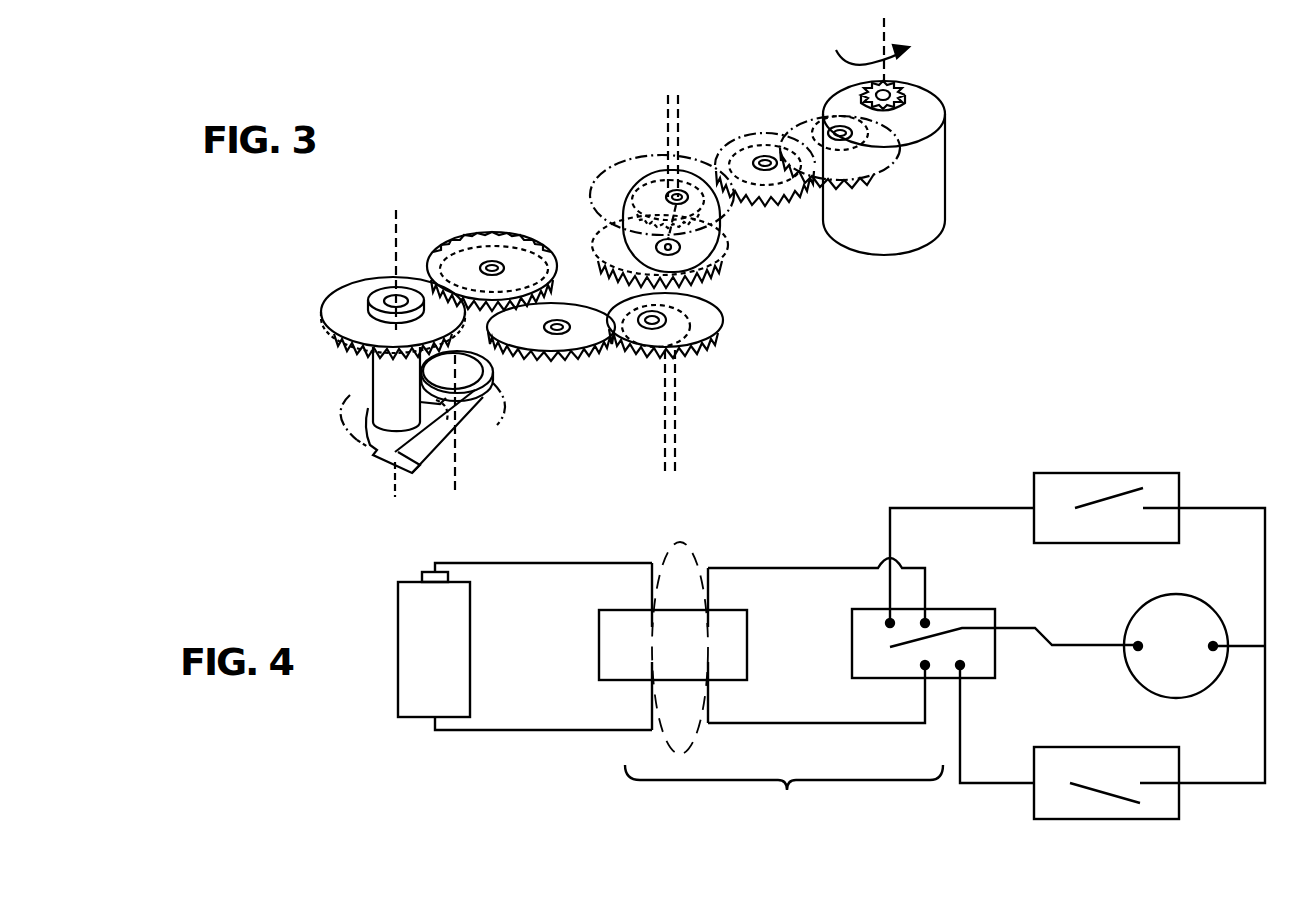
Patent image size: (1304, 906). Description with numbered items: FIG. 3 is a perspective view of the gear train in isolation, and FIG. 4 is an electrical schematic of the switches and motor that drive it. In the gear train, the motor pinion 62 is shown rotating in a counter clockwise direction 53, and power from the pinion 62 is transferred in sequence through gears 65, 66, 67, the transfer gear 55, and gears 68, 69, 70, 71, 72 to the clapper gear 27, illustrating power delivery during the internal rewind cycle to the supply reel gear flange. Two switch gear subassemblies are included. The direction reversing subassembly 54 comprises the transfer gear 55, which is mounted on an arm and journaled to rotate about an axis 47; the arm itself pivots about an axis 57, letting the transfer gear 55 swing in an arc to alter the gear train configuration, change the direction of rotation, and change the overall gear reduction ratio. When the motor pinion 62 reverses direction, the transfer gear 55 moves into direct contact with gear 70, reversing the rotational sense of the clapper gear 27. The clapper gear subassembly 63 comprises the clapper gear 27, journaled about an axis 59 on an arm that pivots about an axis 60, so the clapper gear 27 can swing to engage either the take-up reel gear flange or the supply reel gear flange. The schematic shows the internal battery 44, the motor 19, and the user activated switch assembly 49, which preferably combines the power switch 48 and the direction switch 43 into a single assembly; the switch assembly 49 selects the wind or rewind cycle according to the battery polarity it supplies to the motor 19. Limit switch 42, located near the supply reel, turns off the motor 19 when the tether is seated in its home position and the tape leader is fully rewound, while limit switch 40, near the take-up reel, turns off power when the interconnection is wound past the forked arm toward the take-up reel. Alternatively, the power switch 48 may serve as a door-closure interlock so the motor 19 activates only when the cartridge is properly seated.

In FIG. 3, the motor 19 is at (945, 153).
In FIG. 4, the motor 19 is at (1194, 646).
In FIG. 3, the clapper gear 27 is at (500, 392).
In FIG. 4, the limit switch 40 is at (1103, 473).
In FIG. 4, the limit switch 42 is at (1160, 819).
In FIG. 4, the direction switch 43 is at (943, 693).
In FIG. 4, the internal battery 44 is at (398, 651).
In FIG. 3, the axis 47 is at (665, 436).
In FIG. 4, the power switch 48 is at (680, 688).
In FIG. 4, the switch assembly 49 is at (784, 793).
In FIG. 3, the counter clockwise direction 53 is at (858, 51).
In FIG. 3, the direction reversing subassembly 54 is at (682, 100).
In FIG. 3, the transfer gear 55 is at (713, 280).
In FIG. 3, the axis 57 is at (675, 436).
In FIG. 3, the axis 59 is at (458, 468).
In FIG. 3, the axis 60 is at (392, 490).
In FIG. 3, the motor pinion 62 is at (907, 84).
In FIG. 3, the clapper gear subassembly 63 is at (302, 424).
In FIG. 3, the gear 65 is at (845, 110).
In FIG. 3, the gear 66 is at (776, 203).
In FIG. 3, the gear 67 is at (592, 214).
In FIG. 3, the gear 68 is at (683, 360).
In FIG. 3, the gear 69 is at (558, 368).
In FIG. 3, the gear 70 is at (490, 233).
In FIG. 3, the gear 71 is at (390, 280).
In FIG. 3, the gear 72 is at (358, 452).